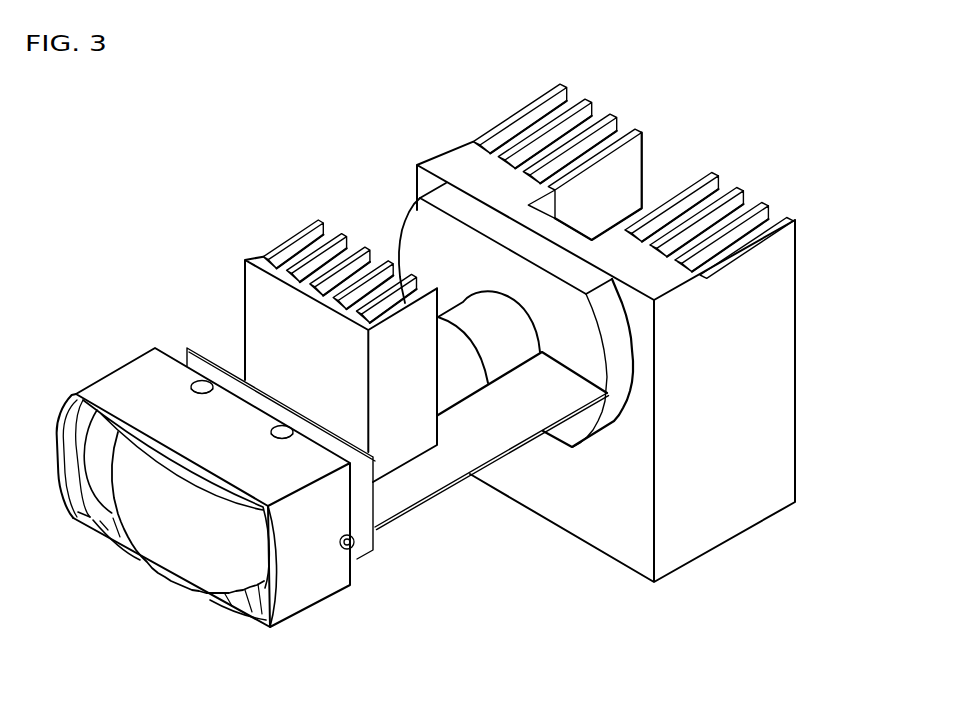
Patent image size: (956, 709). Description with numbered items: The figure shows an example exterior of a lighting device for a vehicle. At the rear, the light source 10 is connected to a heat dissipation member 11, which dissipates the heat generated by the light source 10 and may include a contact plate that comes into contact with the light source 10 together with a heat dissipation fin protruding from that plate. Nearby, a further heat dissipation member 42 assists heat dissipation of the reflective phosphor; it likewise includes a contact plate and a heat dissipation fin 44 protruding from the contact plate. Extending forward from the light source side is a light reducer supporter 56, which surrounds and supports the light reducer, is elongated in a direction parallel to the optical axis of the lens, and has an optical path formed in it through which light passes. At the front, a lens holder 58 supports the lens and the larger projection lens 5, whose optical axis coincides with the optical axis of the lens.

The projection lens 5 is at (163, 552).
The light source 10 is at (483, 310).
The heat dissipation member 11 is at (782, 481).
The heat dissipation member 42 is at (326, 305).
The heat dissipation fin 44 is at (283, 258).
The light reducer supporter 56 is at (455, 380).
The lens holder 58 is at (216, 504).